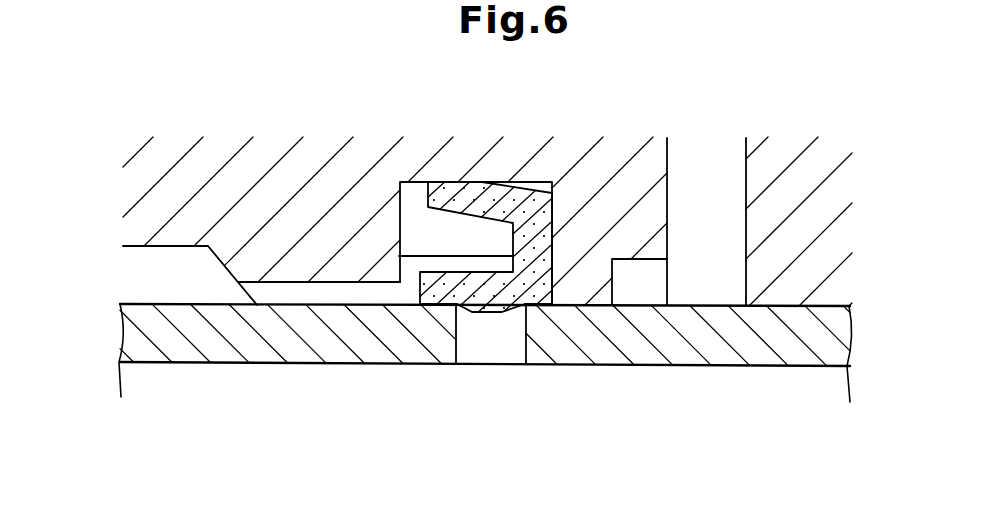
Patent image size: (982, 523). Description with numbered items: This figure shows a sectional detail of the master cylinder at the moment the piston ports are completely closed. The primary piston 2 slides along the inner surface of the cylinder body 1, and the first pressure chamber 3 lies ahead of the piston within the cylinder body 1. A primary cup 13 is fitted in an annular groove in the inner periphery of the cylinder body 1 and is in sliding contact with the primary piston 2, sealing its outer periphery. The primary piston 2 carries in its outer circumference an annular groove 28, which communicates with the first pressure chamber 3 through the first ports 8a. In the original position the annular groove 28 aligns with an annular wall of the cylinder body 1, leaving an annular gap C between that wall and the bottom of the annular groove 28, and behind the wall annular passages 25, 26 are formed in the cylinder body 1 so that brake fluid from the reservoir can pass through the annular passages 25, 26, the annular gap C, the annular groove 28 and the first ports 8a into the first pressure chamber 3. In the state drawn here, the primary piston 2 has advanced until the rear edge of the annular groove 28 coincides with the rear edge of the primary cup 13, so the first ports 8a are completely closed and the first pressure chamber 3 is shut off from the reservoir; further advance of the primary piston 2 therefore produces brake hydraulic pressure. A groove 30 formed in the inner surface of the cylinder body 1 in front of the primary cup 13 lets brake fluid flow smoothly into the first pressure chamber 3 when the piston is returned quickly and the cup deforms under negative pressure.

The groove 30 is at (317, 280).
The primary cup 13 is at (480, 205).
The annular gap C is at (573, 291).
The annular passage 25 is at (607, 288).
The annular passage 26 is at (707, 185).
The cylinder body 1 is at (783, 202).
The primary piston 2 is at (715, 342).
The first pressure chamber 3 is at (153, 382).
The first port 8a is at (505, 338).
The annular groove 28 is at (533, 308).